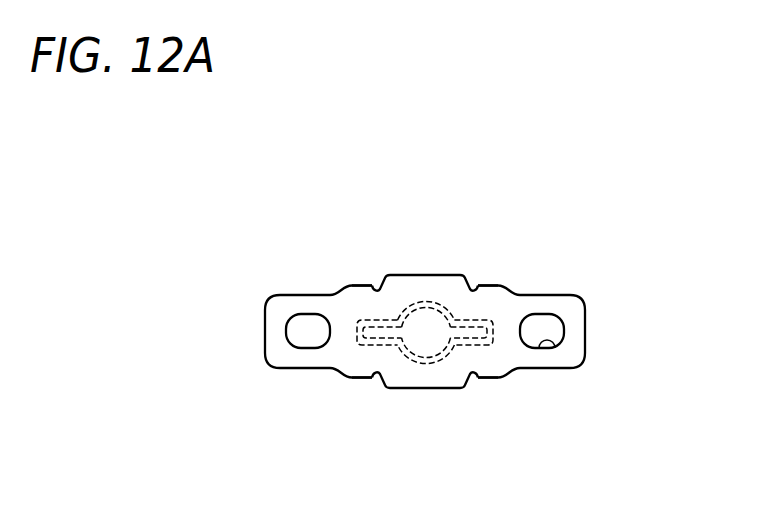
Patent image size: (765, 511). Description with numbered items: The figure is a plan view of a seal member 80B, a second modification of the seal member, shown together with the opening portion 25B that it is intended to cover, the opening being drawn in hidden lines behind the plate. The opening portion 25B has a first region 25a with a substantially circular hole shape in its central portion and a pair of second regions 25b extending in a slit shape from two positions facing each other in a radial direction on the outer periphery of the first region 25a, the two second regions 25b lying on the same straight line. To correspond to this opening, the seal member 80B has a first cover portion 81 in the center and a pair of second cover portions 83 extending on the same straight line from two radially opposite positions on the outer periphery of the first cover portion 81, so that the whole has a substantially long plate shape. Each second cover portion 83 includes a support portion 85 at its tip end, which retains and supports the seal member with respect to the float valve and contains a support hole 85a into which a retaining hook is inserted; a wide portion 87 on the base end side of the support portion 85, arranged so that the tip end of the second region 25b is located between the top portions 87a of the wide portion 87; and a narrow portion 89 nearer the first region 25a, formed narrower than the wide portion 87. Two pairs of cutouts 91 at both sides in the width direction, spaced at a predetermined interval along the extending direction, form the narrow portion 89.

The seal member 80B is at (293, 287).
The first cover portion 81 is at (465, 276).
The second cover portion 83 is at (264, 348).
The support portion 85 is at (272, 323).
The support hole 85a is at (548, 343).
The wide portion 87 is at (347, 290).
The top portion 87a is at (358, 287).
The narrow portion 89 is at (373, 303).
The cutout 91 is at (378, 288).
The opening portion 25B is at (426, 300).
The first region 25a is at (423, 360).
The second region 25b is at (366, 345).